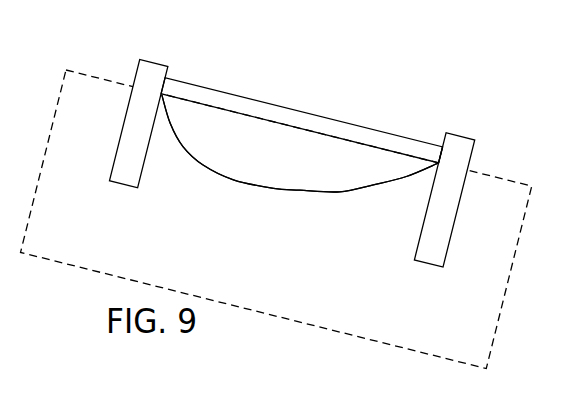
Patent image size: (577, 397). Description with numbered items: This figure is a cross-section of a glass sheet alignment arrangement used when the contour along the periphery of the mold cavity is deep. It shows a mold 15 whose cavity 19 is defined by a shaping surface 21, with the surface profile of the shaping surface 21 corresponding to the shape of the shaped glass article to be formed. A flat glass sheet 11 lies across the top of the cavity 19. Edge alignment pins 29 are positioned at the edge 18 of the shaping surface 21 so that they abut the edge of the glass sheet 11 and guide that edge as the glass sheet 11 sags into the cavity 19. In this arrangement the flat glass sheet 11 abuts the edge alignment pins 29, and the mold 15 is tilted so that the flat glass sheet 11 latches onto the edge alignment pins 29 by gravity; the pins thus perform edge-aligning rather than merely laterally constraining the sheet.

The mold 15 is at (97, 88).
The edge alignment pins 29 is at (161, 69).
The flat glass sheet 11 is at (282, 108).
The cavity 19 is at (310, 150).
The shaping surface 21 is at (273, 186).
The edge of the shaping surface 18 is at (437, 162).